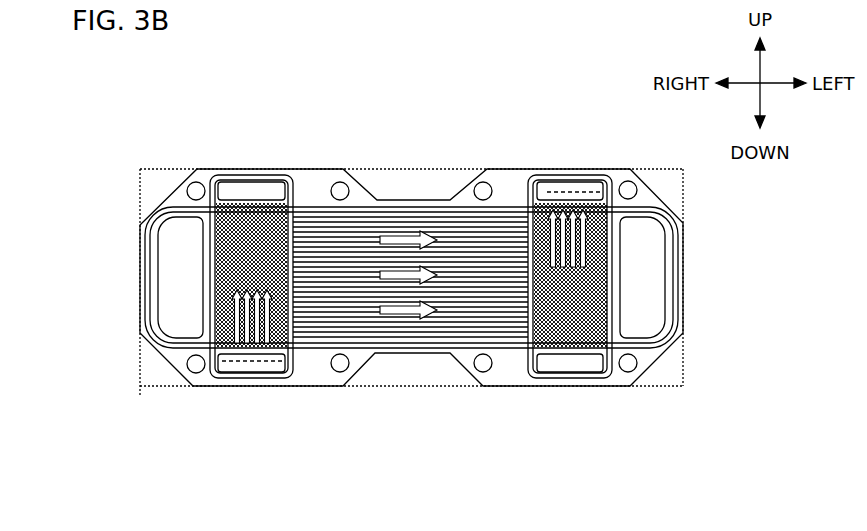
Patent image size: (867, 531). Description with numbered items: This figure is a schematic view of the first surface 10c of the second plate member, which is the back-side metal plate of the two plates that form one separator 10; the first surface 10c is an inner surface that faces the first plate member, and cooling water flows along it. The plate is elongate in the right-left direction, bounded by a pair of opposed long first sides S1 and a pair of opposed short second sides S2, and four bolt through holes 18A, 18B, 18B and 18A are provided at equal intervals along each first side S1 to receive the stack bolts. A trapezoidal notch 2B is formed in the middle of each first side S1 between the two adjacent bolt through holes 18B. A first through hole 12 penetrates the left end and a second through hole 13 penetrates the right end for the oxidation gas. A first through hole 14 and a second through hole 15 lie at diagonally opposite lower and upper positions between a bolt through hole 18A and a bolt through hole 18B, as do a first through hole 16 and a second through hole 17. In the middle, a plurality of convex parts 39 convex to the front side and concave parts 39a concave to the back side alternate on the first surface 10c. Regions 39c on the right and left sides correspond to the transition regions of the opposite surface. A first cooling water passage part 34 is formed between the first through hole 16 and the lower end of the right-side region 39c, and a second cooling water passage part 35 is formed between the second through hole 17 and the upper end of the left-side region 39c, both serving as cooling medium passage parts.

The separator 10 is at (368, 103).
The first surface 10c is at (666, 208).
The trapezoidal notch 2B is at (452, 194).
The first through hole 12 is at (648, 322).
The second through hole 13 is at (176, 320).
The first through hole 14 is at (560, 368).
The second through hole 15 is at (256, 192).
The first through hole 16 is at (257, 368).
The second through hole 17 is at (563, 178).
The bolt through hole 18A is at (196, 187).
The bolt through hole 18B is at (340, 189).
The first cooling water passage part 34 is at (268, 358).
The second cooling water passage part 35 is at (583, 192).
The convex part 39 is at (309, 318).
The concave part 39a is at (376, 309).
The region 39c is at (276, 201).
The first side S1 is at (152, 168).
The second side S2 is at (141, 362).